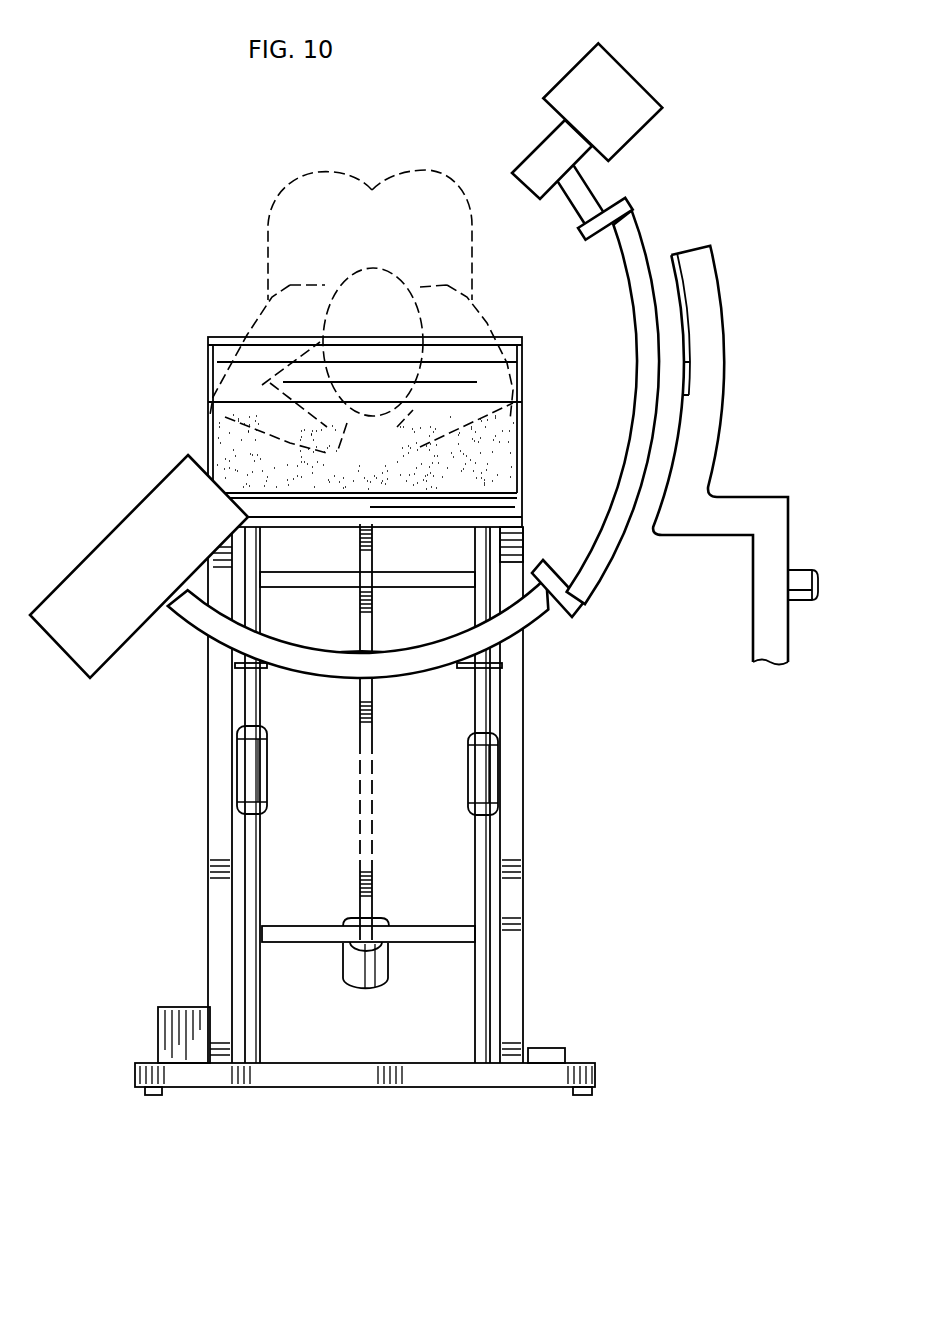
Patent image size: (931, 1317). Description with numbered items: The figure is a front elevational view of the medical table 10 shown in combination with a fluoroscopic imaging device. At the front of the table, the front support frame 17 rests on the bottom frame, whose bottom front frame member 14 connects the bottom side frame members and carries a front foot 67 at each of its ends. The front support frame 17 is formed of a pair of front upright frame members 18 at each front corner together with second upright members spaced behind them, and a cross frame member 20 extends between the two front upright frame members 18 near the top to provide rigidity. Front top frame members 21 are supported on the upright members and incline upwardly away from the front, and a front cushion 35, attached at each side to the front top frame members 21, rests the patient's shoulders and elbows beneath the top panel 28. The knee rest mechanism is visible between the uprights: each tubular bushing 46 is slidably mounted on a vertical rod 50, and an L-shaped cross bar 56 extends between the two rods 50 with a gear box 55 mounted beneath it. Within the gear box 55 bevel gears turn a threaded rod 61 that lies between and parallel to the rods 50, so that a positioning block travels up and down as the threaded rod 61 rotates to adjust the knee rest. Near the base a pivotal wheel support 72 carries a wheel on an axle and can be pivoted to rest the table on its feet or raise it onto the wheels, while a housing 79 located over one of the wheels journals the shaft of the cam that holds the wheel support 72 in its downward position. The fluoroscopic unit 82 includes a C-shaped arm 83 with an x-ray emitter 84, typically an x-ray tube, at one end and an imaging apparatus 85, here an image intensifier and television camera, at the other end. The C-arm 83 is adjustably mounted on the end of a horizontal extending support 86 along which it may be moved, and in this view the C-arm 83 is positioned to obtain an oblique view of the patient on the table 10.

The medical table 10 is at (343, 432).
The bottom front frame member 14 is at (300, 1073).
The front support frame 17 is at (365, 817).
The front upright frame members 18 is at (215, 862).
The cross frame member 20 is at (500, 668).
The front top frame members 21 is at (514, 535).
The top panel 28 is at (215, 356).
The front cushion 35 is at (482, 447).
The tubular bushing 46 is at (253, 765).
The rod 50 is at (251, 866).
The gear box 55 is at (370, 963).
The L-shaped cross bar 56 is at (306, 928).
The threaded rod 61 is at (372, 713).
The front feet 67 is at (154, 1095).
The wheel support 72 is at (546, 1048).
The housing 79 is at (192, 1015).
The fluoroscopic unit 82 is at (648, 187).
The C-shaped arm 83 is at (525, 615).
The x-ray emitter 84 is at (630, 102).
The imaging apparatus 85 is at (183, 478).
The horizontal extending support 86 is at (768, 582).